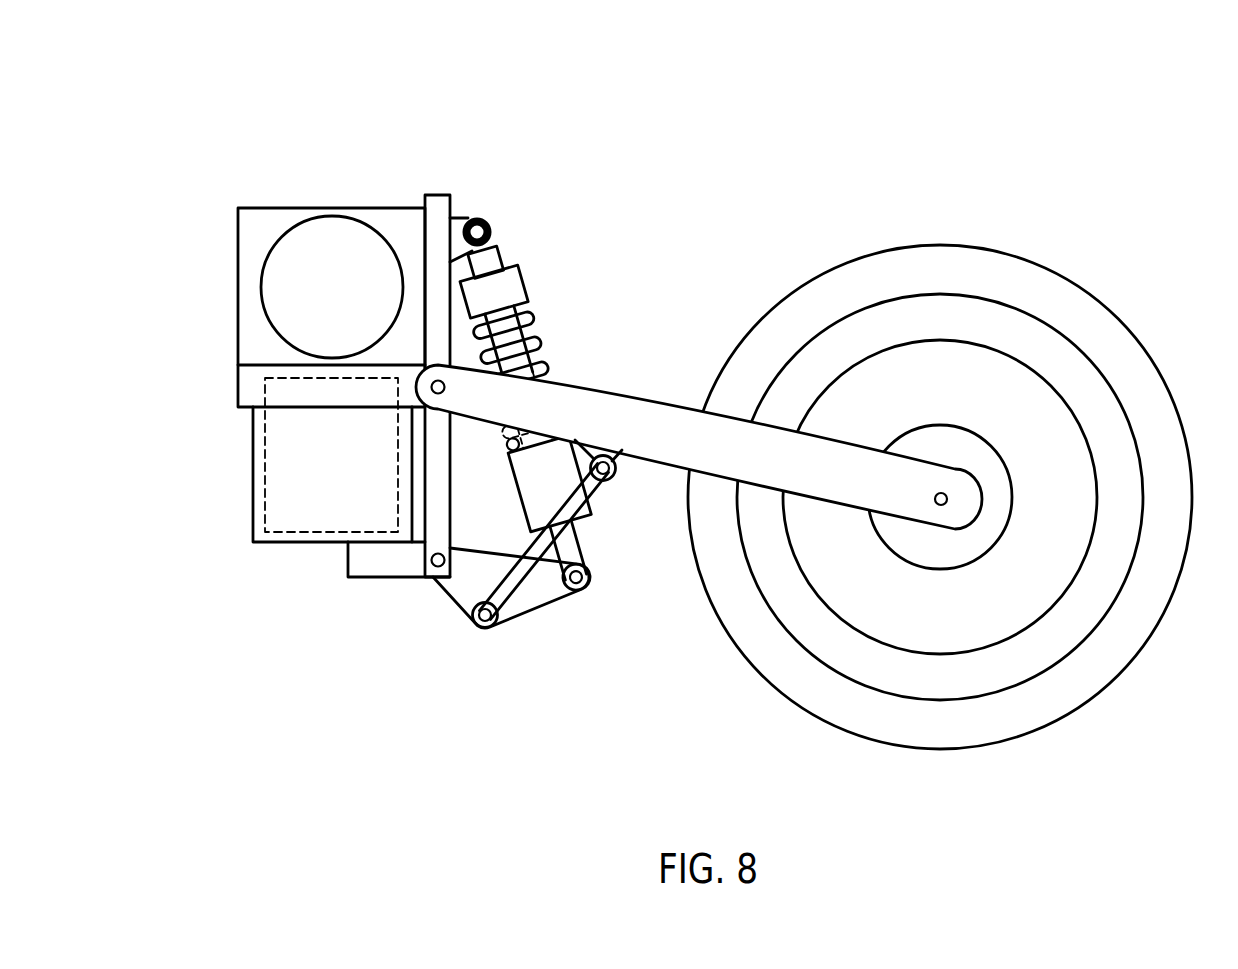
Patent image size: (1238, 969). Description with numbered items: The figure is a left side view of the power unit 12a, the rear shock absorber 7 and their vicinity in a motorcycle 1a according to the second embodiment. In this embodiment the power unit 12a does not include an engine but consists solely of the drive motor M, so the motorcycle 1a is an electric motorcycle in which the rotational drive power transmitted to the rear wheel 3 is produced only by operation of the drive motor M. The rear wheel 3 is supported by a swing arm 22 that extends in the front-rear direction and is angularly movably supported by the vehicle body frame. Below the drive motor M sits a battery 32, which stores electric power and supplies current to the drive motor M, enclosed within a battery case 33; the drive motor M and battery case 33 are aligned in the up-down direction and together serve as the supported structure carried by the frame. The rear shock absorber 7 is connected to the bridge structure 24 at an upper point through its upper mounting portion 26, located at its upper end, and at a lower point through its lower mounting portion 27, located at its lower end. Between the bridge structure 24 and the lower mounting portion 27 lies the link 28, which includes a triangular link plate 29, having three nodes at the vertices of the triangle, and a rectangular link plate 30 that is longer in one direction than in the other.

The power unit 12a is at (217, 154).
The motorcycle 1a is at (757, 158).
The rear wheel 3 is at (957, 245).
The drive motor M is at (323, 208).
The upper mounting portion 26 is at (493, 218).
The rear shock absorber 7 is at (523, 277).
The swing arm 22 is at (657, 402).
The battery 32 is at (250, 462).
The battery case 33 is at (276, 545).
The bridge structure 24 is at (434, 509).
The link 28 is at (501, 666).
The triangular link plate 29 is at (545, 605).
The lower mounting portion 27 is at (590, 550).
The rectangular link plate 30 is at (593, 491).